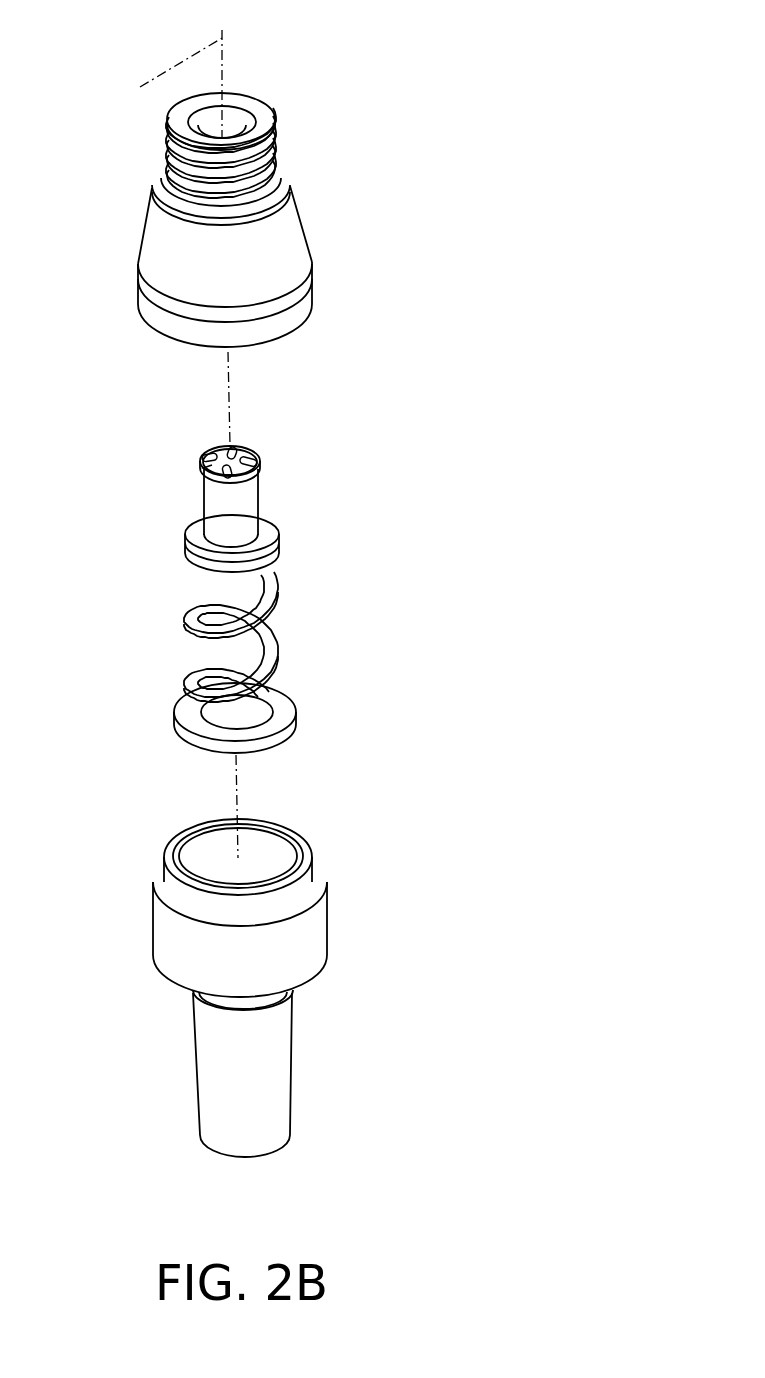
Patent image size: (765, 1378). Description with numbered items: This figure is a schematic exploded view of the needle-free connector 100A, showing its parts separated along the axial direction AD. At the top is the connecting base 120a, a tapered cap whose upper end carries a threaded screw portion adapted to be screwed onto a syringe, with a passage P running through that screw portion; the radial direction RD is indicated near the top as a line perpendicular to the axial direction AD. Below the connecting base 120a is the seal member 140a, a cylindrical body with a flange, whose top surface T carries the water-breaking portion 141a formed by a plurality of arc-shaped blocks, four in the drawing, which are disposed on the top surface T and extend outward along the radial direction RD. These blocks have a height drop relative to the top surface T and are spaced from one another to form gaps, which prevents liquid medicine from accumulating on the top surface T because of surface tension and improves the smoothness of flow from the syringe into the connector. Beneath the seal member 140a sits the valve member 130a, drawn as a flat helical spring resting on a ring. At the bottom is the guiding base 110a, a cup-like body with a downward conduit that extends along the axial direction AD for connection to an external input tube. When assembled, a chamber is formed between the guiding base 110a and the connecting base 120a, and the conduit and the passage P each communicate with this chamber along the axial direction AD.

The needle-free connector 100A is at (308, 609).
The guiding base 110a is at (312, 925).
The connecting base 120a is at (292, 232).
The valve member 130a is at (300, 598).
The seal member 140a is at (243, 505).
The water-breaking portion 141a is at (243, 460).
The axial direction AD is at (222, 62).
The radial direction RD is at (172, 70).
The passage P is at (236, 126).
The top surface T is at (200, 467).